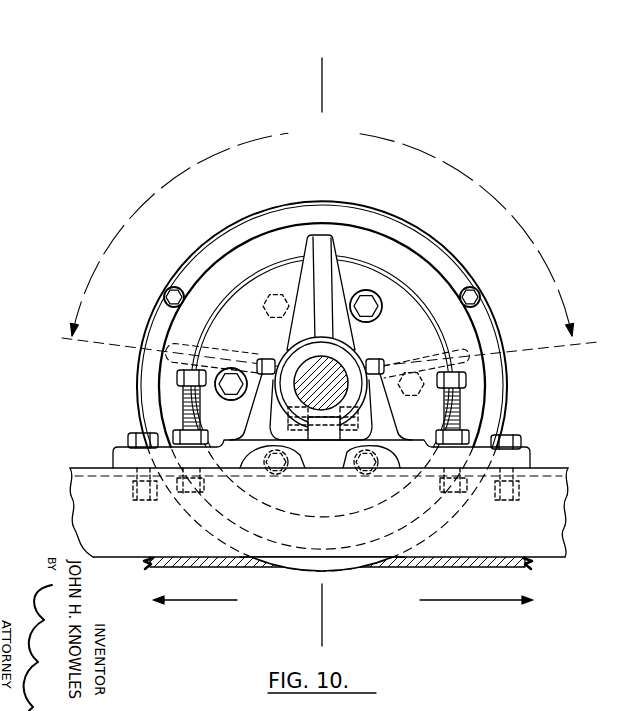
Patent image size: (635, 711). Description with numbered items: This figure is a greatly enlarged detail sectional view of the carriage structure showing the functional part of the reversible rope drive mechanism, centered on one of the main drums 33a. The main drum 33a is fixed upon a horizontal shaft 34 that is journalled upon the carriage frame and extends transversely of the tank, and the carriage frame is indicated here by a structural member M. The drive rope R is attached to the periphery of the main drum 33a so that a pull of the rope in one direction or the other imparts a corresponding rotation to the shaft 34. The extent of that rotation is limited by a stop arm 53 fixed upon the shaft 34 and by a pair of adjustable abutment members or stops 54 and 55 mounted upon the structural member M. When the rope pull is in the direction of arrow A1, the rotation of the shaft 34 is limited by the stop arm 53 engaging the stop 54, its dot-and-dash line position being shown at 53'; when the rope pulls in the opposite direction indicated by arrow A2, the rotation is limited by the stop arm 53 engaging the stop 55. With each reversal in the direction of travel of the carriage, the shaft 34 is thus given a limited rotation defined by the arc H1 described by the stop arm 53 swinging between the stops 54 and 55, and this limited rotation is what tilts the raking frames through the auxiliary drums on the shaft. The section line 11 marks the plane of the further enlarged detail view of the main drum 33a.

The main drum 33a is at (322, 386).
The stop arm 53 is at (328, 292).
The dot-and-dash line position of stop arm 53' is at (221, 345).
The adjustable abutment member or stop 54 is at (176, 388).
The adjustable abutment member or stop 55 is at (468, 386).
The horizontal shaft 34 is at (323, 400).
The arc H1 is at (330, 247).
The section line 11- 11 is at (330, 636).
The structural member M is at (566, 521).
The drive rope R is at (507, 569).
The arrow A1 is at (212, 601).
The arrow A2 is at (496, 601).